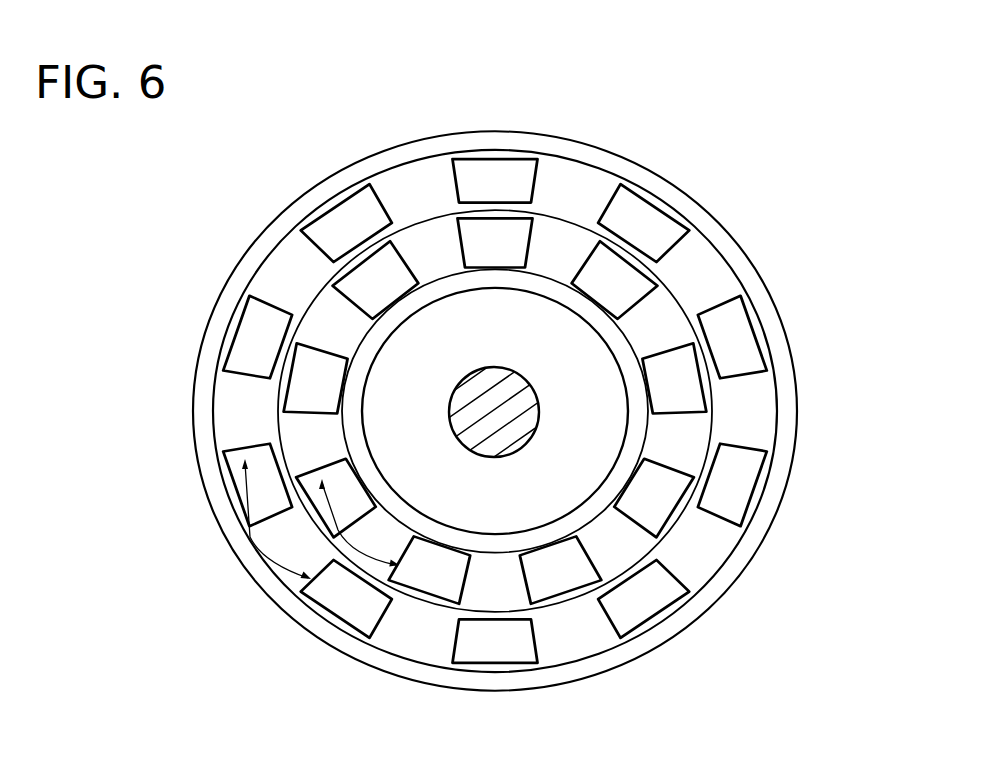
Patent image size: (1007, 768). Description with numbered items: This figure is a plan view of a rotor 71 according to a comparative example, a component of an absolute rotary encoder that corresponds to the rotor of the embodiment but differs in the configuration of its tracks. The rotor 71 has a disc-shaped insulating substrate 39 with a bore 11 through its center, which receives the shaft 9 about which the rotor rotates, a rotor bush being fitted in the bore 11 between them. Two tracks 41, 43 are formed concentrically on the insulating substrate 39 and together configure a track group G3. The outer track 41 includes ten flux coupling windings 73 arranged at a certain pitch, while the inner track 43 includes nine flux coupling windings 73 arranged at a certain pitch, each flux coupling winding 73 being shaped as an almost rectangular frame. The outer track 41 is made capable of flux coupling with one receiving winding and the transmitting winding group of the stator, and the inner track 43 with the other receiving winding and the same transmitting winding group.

The rotor 71 is at (912, 108).
The insulating substrate 39 is at (799, 429).
The flux coupling winding 73 is at (411, 250).
The track group G3 is at (857, 182).
The track 41 is at (692, 263).
The track 43 is at (658, 330).
The bore 11 is at (623, 386).
The shaft 9 is at (494, 458).